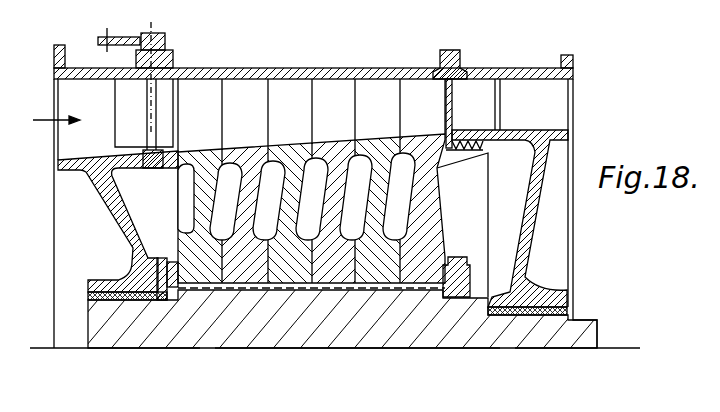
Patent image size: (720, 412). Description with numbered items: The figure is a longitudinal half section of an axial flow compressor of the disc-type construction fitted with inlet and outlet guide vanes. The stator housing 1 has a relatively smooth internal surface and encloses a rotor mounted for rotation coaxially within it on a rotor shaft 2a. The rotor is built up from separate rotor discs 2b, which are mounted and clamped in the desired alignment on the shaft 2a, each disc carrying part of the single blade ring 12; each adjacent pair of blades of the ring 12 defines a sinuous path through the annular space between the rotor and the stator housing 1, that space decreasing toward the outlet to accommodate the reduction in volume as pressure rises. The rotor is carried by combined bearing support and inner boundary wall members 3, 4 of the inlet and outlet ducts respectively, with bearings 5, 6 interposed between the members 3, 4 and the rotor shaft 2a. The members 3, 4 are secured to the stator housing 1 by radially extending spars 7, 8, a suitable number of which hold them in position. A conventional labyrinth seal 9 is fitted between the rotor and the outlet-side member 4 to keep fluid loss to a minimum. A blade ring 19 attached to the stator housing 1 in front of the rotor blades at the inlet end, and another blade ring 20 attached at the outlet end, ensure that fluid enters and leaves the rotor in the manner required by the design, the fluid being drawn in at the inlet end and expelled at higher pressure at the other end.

The stator housing 1 is at (354, 78).
The rotor shaft 2a is at (190, 349).
The rotor discs 2b is at (244, 285).
The combined bearing support and inner boundary wall member of the inlet duct 3 is at (110, 211).
The combined bearing support and inner boundary wall member of the outlet duct 4 is at (533, 220).
The bearing 5 is at (122, 288).
The bearing 6 is at (537, 303).
The radially extending spar 7 is at (72, 90).
The radially extending spar 8 is at (533, 90).
The labyrinth seal 9 is at (483, 149).
The blade ring 12 is at (292, 92).
The blade ring 19 is at (133, 100).
The blade ring 20 is at (468, 97).